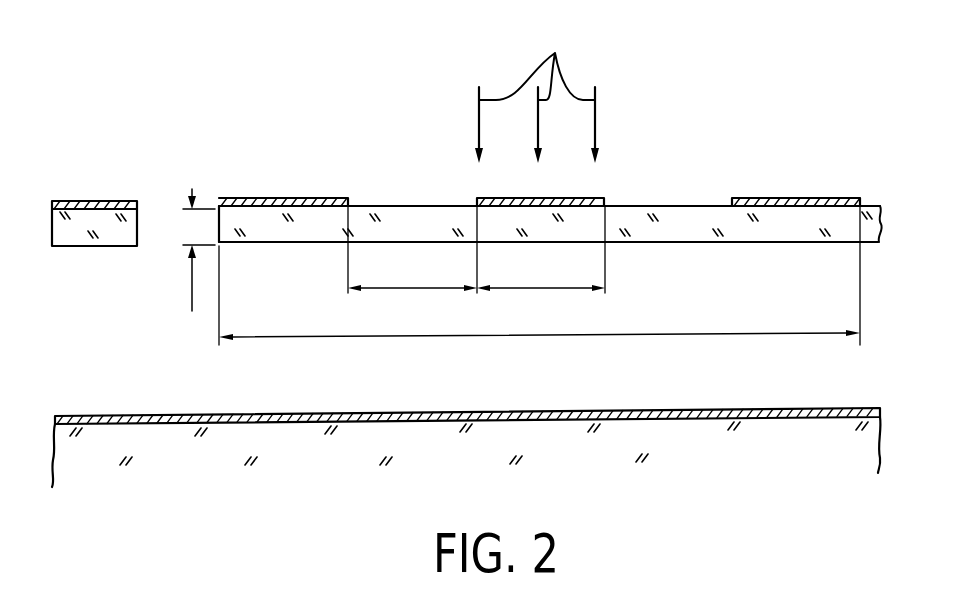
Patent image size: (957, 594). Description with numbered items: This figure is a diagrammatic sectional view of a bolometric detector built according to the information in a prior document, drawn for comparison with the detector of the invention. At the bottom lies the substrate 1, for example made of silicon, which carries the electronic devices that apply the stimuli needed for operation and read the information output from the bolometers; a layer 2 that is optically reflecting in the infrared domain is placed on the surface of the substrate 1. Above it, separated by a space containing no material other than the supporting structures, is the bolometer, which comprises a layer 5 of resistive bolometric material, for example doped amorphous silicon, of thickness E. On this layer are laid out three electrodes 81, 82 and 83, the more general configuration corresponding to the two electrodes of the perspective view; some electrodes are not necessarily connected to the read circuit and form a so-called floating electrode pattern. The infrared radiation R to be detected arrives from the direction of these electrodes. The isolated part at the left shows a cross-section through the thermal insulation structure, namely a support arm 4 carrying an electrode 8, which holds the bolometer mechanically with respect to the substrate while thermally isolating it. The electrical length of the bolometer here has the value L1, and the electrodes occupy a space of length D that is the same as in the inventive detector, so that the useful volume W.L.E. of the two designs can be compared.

The substrate 1 is at (784, 440).
The layer 2 is at (762, 408).
The support arm 4 is at (100, 254).
The layer of bolometric material 5 is at (399, 218).
The electrode 8 is at (92, 206).
The electrode 81 is at (266, 196).
The electrode 82 is at (590, 194).
The electrode 83 is at (780, 194).
The infrared radiation R is at (537, 93).
The thickness E is at (189, 250).
The electrical length L1 is at (476, 249).
The length D is at (539, 276).